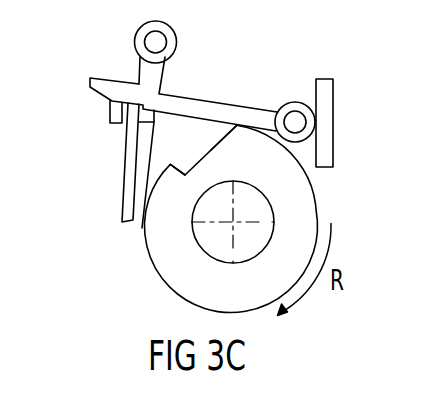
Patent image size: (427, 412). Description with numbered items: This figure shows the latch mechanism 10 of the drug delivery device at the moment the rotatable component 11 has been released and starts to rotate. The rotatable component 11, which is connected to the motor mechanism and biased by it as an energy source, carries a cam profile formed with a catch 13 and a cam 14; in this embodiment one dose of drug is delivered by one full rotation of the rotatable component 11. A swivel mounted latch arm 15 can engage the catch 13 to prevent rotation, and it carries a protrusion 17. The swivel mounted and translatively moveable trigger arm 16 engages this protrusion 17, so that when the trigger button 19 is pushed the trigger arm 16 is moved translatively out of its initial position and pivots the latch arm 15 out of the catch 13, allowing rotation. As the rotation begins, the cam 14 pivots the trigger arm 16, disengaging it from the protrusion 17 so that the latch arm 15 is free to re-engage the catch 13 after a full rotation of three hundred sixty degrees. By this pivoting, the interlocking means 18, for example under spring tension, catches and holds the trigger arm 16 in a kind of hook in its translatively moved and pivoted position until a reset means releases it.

The latch mechanism 10 is at (115, 54).
The rotatable component 11 is at (307, 205).
The catch 13 is at (184, 176).
The cam 14 is at (238, 127).
The latch arm 15 is at (152, 78).
The trigger arm 16 is at (259, 113).
The protrusion 17 is at (144, 147).
The interlocking means 18 is at (116, 113).
The trigger button 19 is at (326, 115).